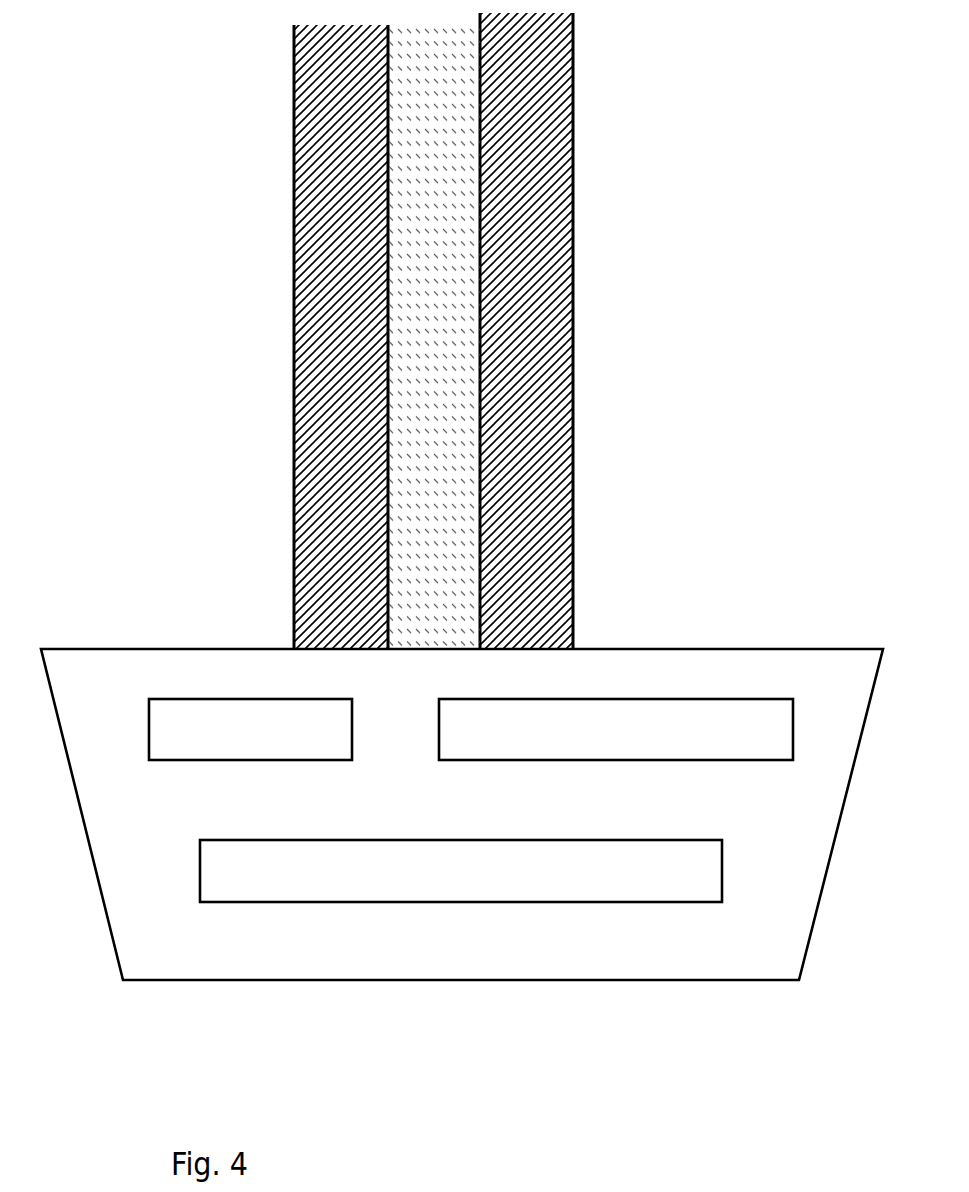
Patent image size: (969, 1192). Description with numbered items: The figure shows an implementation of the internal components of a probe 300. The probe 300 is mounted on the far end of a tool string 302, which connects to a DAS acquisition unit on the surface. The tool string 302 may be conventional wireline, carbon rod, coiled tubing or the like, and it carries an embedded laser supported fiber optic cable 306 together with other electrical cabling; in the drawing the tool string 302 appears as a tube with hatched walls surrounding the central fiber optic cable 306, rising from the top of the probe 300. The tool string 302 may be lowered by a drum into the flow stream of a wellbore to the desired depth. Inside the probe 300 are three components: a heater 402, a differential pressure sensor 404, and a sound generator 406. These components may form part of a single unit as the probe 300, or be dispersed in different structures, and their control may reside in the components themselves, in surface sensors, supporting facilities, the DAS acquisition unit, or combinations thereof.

The probe 300 is at (462, 496).
The tool string 302 is at (576, 311).
The laser supported fiber optic cable 306 is at (422, 294).
The heater 402 is at (250, 729).
The differential pressure sensor 404 is at (461, 871).
The sound generator 406 is at (616, 729).